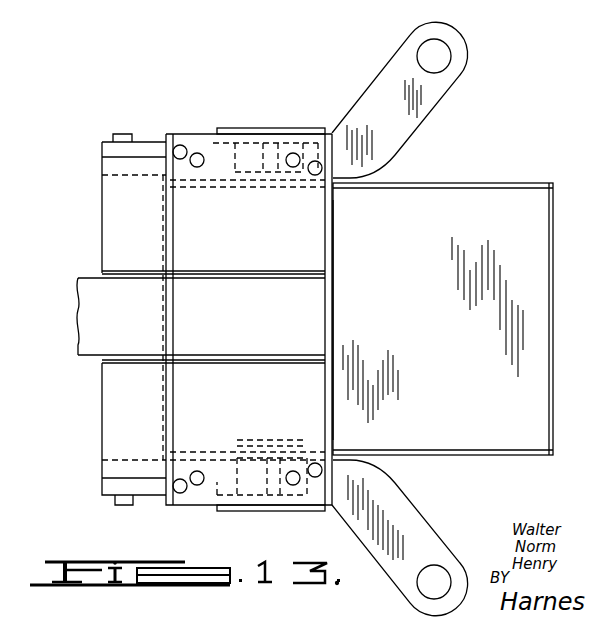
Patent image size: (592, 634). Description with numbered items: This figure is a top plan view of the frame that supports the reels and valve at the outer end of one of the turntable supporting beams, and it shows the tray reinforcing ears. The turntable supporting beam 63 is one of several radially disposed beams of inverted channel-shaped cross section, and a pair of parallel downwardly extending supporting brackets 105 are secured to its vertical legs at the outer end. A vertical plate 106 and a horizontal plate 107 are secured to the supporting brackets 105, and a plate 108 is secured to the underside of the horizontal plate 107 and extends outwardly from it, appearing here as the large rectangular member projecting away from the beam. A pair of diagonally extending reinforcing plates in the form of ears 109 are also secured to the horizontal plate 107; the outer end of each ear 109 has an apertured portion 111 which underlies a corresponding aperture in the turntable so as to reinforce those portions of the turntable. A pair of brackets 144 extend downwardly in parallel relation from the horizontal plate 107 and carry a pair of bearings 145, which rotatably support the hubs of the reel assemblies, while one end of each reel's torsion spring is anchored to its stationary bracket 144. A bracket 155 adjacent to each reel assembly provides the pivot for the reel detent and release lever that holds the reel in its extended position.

The turntable supporting beam 63 is at (98, 322).
The supporting bracket 105 is at (255, 280).
The vertical plate 106 is at (333, 296).
The horizontal plate 107 is at (310, 386).
The plate 108 is at (493, 338).
The reinforcing plate (ear) 109 is at (410, 100).
The apertured portion 111 is at (442, 46).
The bracket 144 is at (237, 128).
The bearing 145 is at (228, 180).
The bracket 155 is at (107, 203).